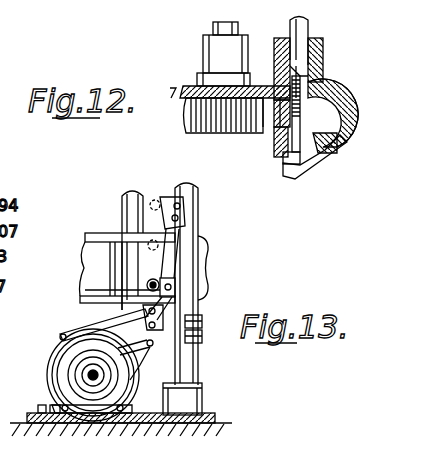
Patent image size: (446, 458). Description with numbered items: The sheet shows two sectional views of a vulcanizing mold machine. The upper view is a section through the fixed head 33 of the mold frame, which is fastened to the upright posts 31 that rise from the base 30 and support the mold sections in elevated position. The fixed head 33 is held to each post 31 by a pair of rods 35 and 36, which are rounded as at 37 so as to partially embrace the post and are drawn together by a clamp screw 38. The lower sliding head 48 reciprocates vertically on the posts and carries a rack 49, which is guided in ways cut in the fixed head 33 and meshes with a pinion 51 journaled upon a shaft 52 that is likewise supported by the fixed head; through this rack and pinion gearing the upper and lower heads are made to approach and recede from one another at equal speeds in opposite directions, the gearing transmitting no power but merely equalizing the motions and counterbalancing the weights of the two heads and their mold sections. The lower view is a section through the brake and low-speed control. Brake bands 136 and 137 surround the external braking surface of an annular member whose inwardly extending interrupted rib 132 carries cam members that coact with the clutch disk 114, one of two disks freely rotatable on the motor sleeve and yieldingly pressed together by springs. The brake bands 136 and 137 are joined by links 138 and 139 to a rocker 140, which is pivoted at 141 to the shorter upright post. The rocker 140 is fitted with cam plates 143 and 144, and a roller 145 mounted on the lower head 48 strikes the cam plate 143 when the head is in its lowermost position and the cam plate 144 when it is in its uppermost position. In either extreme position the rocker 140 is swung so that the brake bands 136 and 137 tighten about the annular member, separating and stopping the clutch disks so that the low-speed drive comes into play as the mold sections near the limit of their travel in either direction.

In FIG. 12, the shaft 52 is at (228, 22).
In FIG. 12, the rack 49 is at (268, 97).
In FIG. 12, the pinion 51 is at (221, 123).
In FIG. 12, the rods 35 is at (305, 30).
In FIG. 12, the upright posts 31 is at (327, 100).
In FIG. 12, the rounded portions 37 is at (336, 118).
In FIG. 12, the clamp screw 38 is at (272, 127).
In FIG. 12, the fixed head 33 is at (330, 140).
In FIG. 12, the rods 36 is at (316, 152).
In FIG. 13, the interrupted rib 132 is at (197, 202).
In FIG. 13, the link 138 is at (92, 318).
In FIG. 13, the cam plate 143 is at (115, 288).
In FIG. 13, the roller 145 is at (143, 285).
In FIG. 13, the cam plate 144 is at (162, 196).
In FIG. 13, the pivot 141 is at (195, 331).
In FIG. 13, the lower sliding head 48 is at (205, 262).
In FIG. 13, the rocker 140 is at (188, 299).
In FIG. 13, the link 139 is at (160, 360).
In FIG. 13, the brake band 137 is at (193, 383).
In FIG. 13, the brake band 136 is at (48, 377).
In FIG. 13, the disk 114 is at (66, 381).
In FIG. 13, the base 30 is at (213, 405).